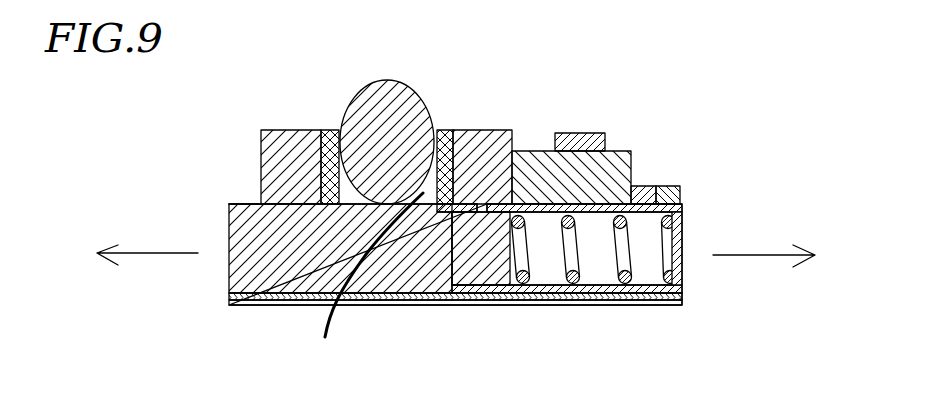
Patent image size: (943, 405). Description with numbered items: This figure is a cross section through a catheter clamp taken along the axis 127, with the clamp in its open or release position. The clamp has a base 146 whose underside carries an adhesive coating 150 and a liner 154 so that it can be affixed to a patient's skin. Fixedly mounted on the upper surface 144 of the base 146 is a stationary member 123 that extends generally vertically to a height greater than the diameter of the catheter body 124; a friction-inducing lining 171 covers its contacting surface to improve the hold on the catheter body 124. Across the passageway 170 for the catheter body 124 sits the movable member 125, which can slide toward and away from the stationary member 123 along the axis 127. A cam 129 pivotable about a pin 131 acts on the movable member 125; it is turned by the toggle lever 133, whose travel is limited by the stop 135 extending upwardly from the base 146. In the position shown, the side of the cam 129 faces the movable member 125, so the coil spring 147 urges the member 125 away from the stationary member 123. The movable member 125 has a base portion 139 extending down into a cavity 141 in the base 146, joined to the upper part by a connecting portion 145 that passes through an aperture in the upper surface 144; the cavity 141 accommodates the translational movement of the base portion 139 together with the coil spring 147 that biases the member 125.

The stationary member 123 is at (292, 130).
The catheter body 124 is at (382, 97).
The friction-inducing lining 171 is at (447, 132).
The movable member 125 is at (493, 142).
The cam 129 is at (613, 164).
The pin 131 is at (587, 132).
The toggle lever 133 is at (640, 185).
The stop 135 is at (680, 193).
The axis 127 is at (162, 253).
The upper surface 144 is at (245, 203).
The base 146 is at (228, 262).
The adhesive coating 150 is at (230, 298).
The liner 154 is at (280, 307).
The passageway 170 is at (364, 285).
The connecting portion 145 is at (483, 210).
The base portion 139 is at (487, 272).
The cavity 141 is at (647, 273).
The coil spring 147 is at (628, 252).